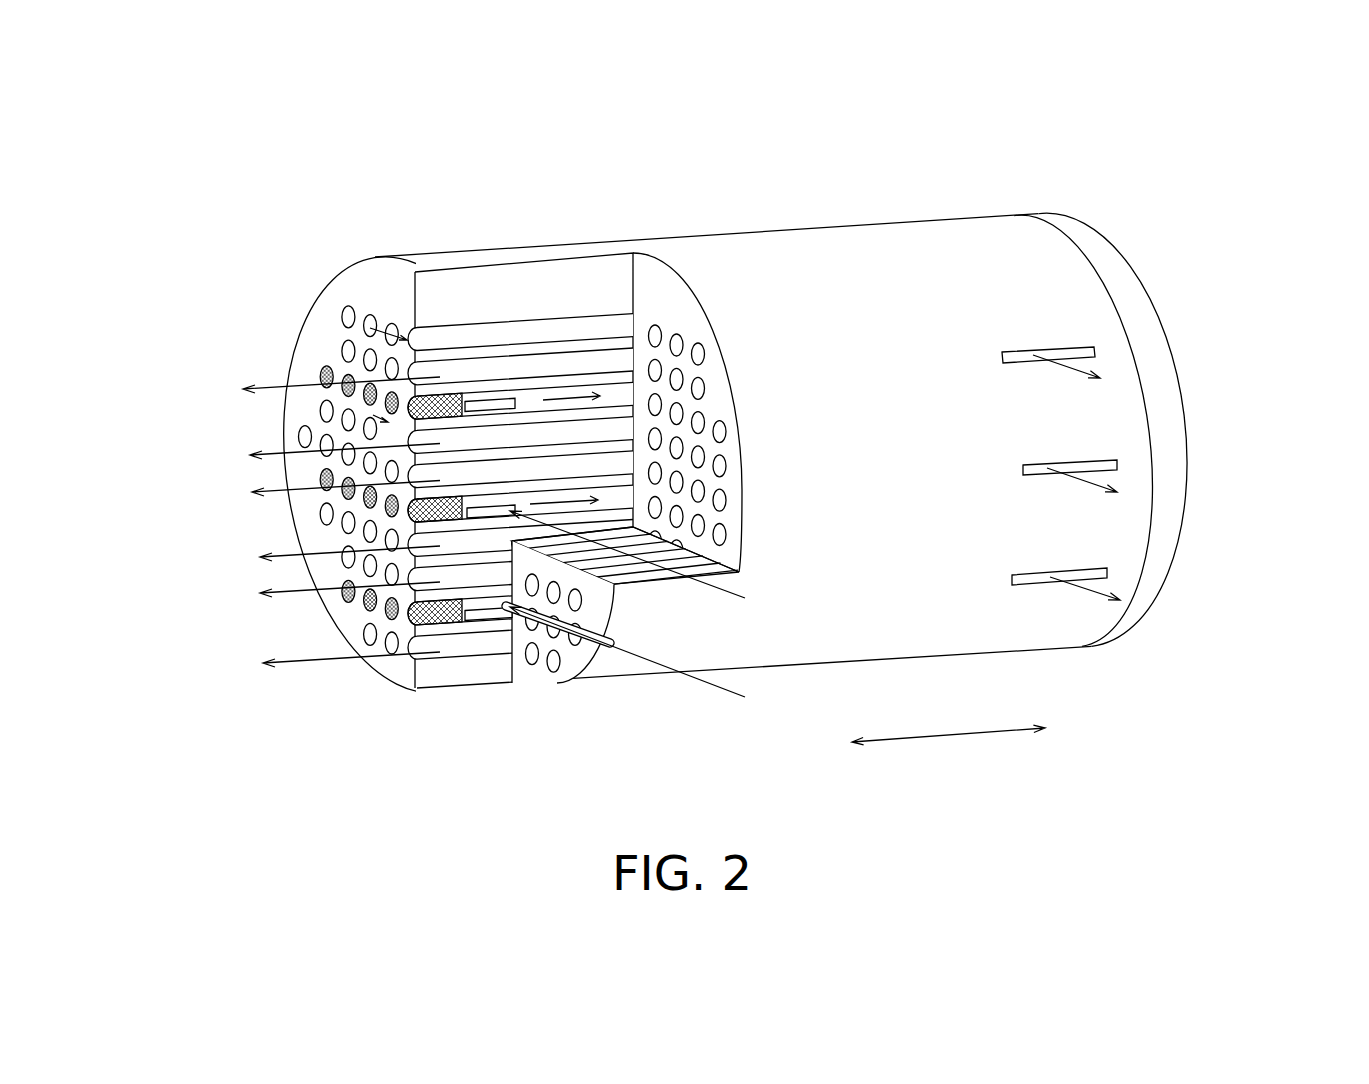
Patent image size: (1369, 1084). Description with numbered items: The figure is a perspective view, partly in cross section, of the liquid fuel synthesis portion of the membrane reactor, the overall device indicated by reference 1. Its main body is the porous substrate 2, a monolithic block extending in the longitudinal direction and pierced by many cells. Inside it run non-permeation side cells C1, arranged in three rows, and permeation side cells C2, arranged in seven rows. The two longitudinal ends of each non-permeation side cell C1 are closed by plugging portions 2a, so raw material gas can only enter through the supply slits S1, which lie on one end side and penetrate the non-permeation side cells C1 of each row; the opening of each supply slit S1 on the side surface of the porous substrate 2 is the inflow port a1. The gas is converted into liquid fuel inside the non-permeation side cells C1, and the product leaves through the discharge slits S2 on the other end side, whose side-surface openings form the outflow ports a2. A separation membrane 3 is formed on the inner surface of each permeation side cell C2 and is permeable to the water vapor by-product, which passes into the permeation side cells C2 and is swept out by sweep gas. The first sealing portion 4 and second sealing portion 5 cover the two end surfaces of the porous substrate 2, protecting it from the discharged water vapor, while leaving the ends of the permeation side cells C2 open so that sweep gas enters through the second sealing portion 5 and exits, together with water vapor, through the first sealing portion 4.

The membrane separation module 1 is at (1136, 191).
The porous substrate 2 is at (572, 425).
The plugging portion 2a is at (464, 627).
The separation membrane 3 is at (343, 323).
The first sealing portion 4 is at (371, 255).
The second sealing portion 5 is at (1040, 216).
The supply slit S1 is at (591, 447).
The inflow port a1 is at (593, 647).
The discharge slit S2 is at (1177, 456).
The outflow port a2 is at (1095, 353).
The non-permeation side cell C1 is at (612, 387).
The permeation side cell C2 is at (477, 333).